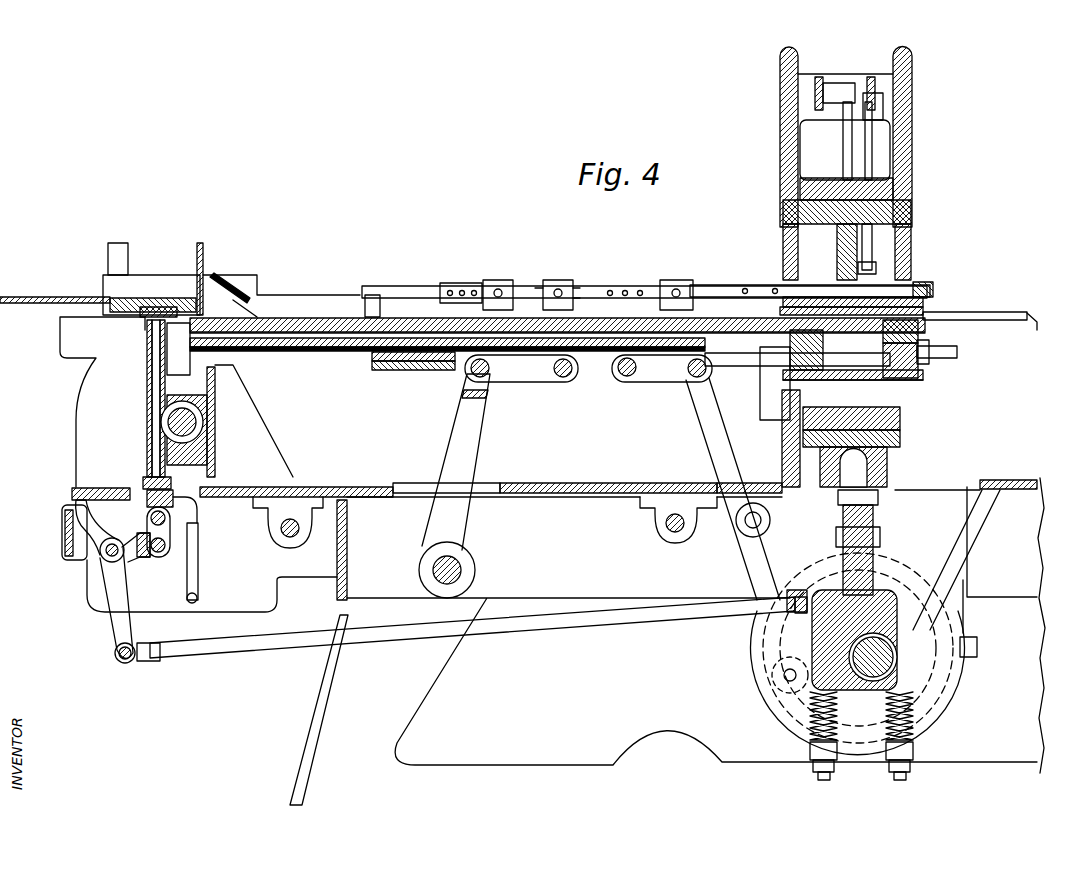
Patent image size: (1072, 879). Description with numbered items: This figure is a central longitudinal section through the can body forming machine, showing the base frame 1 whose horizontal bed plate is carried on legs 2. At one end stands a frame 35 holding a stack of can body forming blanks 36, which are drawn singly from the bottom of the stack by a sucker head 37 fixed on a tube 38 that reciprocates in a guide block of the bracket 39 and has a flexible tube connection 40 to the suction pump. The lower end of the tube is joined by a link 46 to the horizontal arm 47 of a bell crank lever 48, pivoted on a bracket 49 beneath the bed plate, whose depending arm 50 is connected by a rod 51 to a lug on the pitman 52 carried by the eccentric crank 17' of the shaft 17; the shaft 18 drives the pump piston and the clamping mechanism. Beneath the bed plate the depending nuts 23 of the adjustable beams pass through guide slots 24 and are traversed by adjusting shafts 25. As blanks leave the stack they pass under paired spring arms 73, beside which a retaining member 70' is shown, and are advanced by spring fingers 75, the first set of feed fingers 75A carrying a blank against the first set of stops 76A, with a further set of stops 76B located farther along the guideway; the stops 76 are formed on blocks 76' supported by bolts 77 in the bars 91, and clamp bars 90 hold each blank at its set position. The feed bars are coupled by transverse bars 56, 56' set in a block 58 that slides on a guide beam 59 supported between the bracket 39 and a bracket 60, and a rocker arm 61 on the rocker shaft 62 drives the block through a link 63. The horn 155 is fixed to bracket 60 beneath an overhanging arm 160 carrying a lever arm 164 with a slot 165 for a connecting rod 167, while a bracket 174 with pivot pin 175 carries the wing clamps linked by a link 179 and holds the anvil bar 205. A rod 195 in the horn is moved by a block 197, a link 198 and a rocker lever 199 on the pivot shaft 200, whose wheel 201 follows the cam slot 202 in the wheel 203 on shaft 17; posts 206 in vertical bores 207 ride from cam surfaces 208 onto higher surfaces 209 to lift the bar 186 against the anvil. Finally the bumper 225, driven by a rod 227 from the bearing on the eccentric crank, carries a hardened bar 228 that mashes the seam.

The base frame 1 is at (560, 497).
The legs 2 is at (305, 716).
The shaft 17 is at (876, 622).
The eccentric crank 17' is at (988, 618).
The shaft 18 is at (165, 420).
The depending nuts 23 is at (296, 490).
The guide slots 24 is at (335, 488).
The adjusting shafts 25 is at (285, 536).
The frame 35 is at (128, 248).
The can body forming blanks 36 is at (150, 298).
The sucker head 37 is at (145, 318).
The tube 38 is at (152, 352).
The bracket 39 is at (216, 395).
The flexible tube connection 40 is at (196, 596).
The link 46 is at (170, 522).
The horizontal arm 47 is at (190, 550).
The bell crank lever 48 is at (105, 560).
The bracket 49 is at (88, 520).
The depending arm 50 is at (115, 627).
The rod 51 is at (288, 642).
The pitman 52 is at (770, 600).
The transverse bar 56 is at (447, 375).
The transverse bar 56' is at (413, 386).
The block 58 is at (500, 380).
The guide beam 59 is at (372, 345).
The bracket 60 is at (783, 400).
The rocker arm 61 is at (458, 452).
The rocker shaft 62 is at (430, 563).
The link 63 is at (545, 375).
The wedge 70' is at (226, 279).
The spring arms 73 is at (248, 305).
The spring fingers 75 is at (700, 288).
The first set of feed fingers 75A is at (312, 302).
The stops 76 is at (676, 275).
The blocks 76' is at (644, 275).
The first set of stops 76A is at (408, 303).
The block 76B is at (552, 282).
The bolts 77 is at (568, 288).
The clamp bars 90 is at (371, 312).
The bars 91 is at (470, 282).
The horn 155 is at (920, 326).
The overhanging arm 160 is at (790, 142).
The lever arm 164 is at (880, 92).
The slot 165 is at (820, 85).
The connecting rod 167 is at (842, 155).
The bracket 174 is at (912, 222).
The pivot pin 175 is at (882, 262).
The link 179 is at (872, 152).
The bar 186 is at (933, 292).
The rod 195 is at (752, 360).
The block 197 is at (668, 368).
The link 198 is at (630, 370).
The rocker lever 199 is at (710, 489).
The pivot shaft 200 is at (750, 538).
The wheel 201 is at (782, 680).
The cam slot 202 is at (805, 700).
The wheel 203 is at (765, 640).
The anvil bar 205 is at (912, 283).
The posts 206 is at (922, 372).
The vertical bores 207 is at (930, 357).
The cam surfaces 208 is at (860, 378).
The higher surfaces 209 is at (820, 380).
The bumper 225 is at (900, 430).
The rod 227 is at (880, 530).
The hardened bar 228 is at (900, 412).